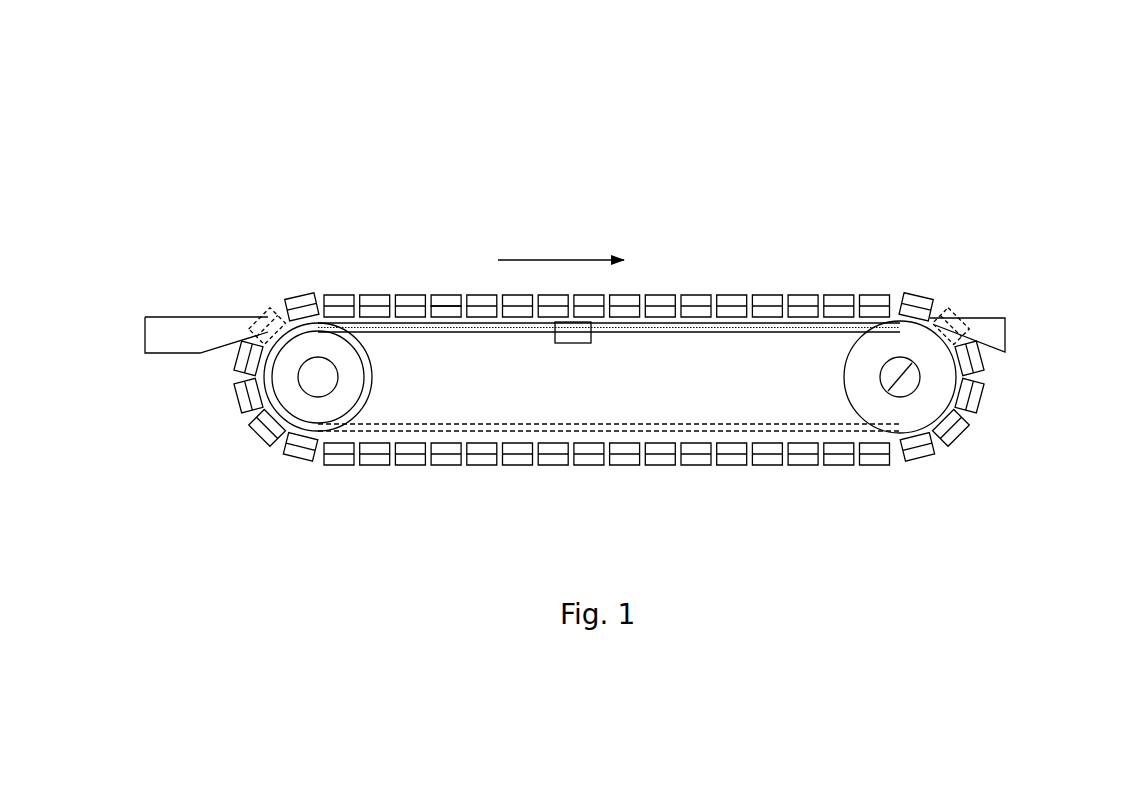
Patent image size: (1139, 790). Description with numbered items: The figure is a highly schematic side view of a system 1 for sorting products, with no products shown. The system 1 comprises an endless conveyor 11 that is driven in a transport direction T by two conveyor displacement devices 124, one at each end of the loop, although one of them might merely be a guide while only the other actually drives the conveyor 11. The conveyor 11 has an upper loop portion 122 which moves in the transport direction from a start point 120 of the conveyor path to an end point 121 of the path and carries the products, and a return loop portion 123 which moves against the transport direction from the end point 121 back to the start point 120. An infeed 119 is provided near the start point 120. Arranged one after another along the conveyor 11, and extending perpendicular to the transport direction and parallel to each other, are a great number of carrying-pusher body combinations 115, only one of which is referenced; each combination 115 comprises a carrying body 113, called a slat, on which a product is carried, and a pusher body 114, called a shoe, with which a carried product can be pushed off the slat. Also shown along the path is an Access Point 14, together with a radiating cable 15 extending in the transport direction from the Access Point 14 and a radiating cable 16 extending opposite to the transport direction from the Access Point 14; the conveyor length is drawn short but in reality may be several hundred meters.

The system for sorting products 1 is at (857, 106).
The conveyor 11 is at (875, 260).
The carrying body 113 is at (440, 309).
The pusher body 114 is at (440, 222).
The carrying-pusher body combination 115 is at (444, 251).
The Access Point 14 is at (578, 332).
The radiating cable 15 is at (763, 332).
The radiating cable 16 is at (372, 330).
The infeed 119 is at (160, 263).
The start point 120 is at (322, 235).
The end point 121 is at (942, 240).
The upper loop portion 122 is at (712, 277).
The return loop portion 123 is at (1028, 378).
The conveyor displacement device 124 is at (298, 403).